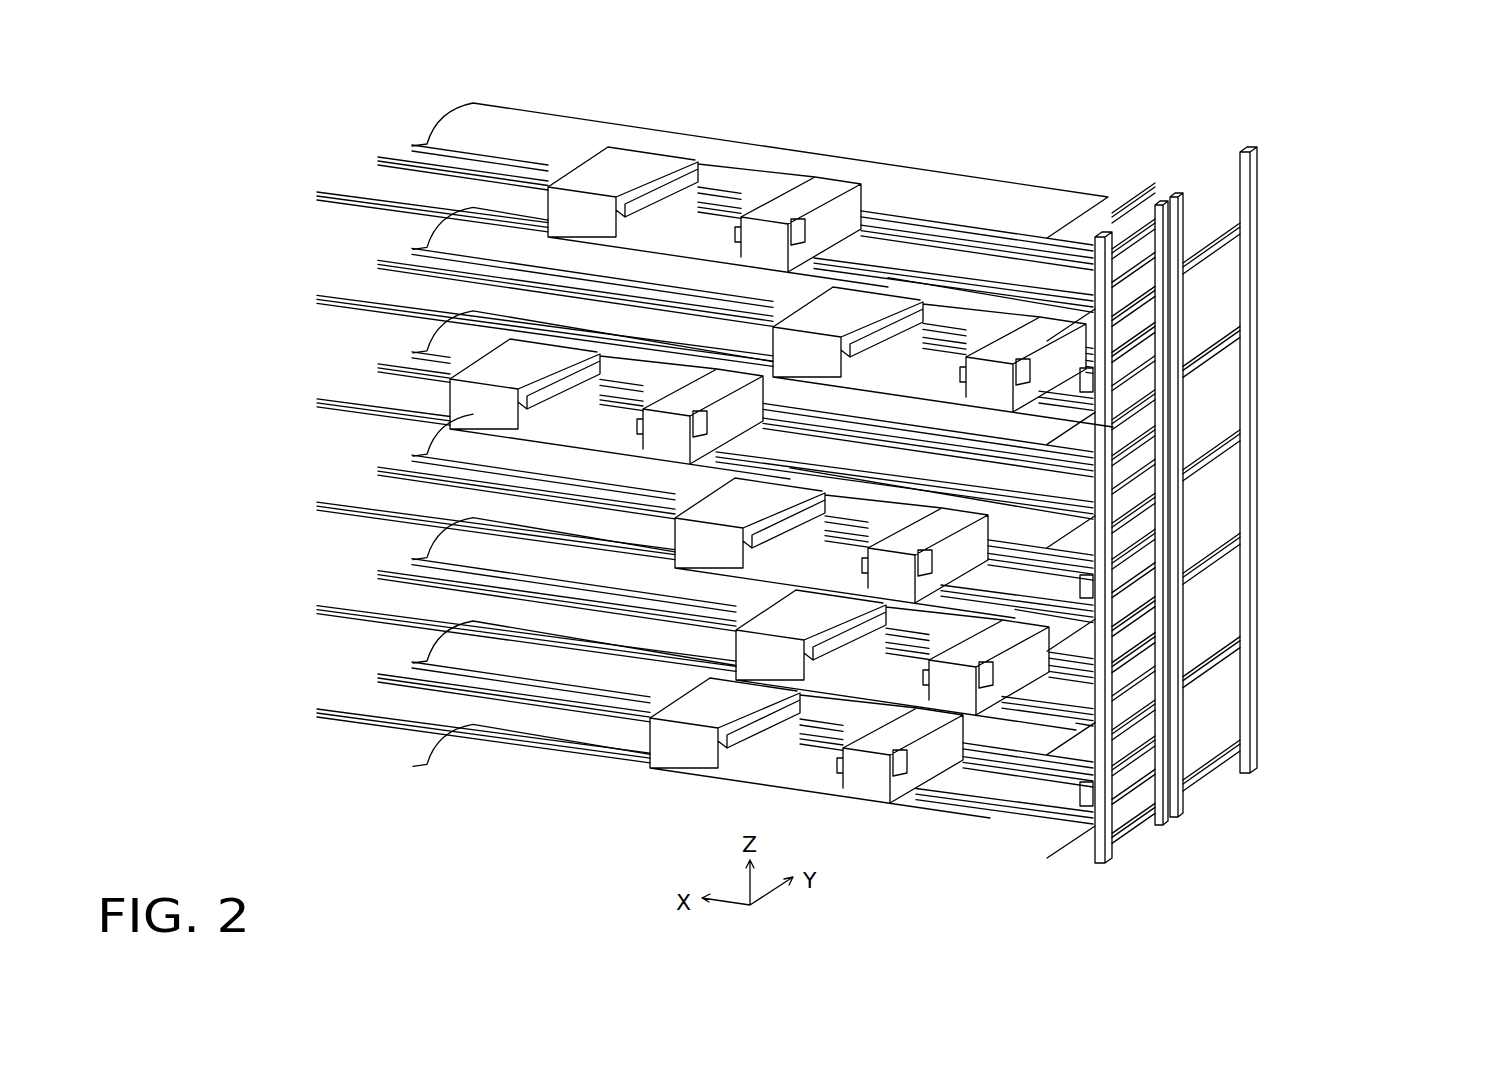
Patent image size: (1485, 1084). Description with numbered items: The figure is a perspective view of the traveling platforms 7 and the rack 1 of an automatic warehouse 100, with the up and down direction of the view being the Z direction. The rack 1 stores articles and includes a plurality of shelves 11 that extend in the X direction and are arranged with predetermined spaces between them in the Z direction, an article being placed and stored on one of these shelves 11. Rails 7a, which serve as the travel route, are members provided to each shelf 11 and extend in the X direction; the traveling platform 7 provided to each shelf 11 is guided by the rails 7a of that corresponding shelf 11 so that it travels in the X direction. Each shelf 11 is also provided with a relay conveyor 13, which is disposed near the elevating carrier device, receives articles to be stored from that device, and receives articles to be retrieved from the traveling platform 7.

The rack 1 is at (896, 463).
The automatic warehouse 100 is at (1316, 151).
The traveling platform 7 is at (822, 765).
The rail 7a is at (512, 698).
The shelf 11 is at (915, 185).
The relay conveyor 13 is at (1207, 742).